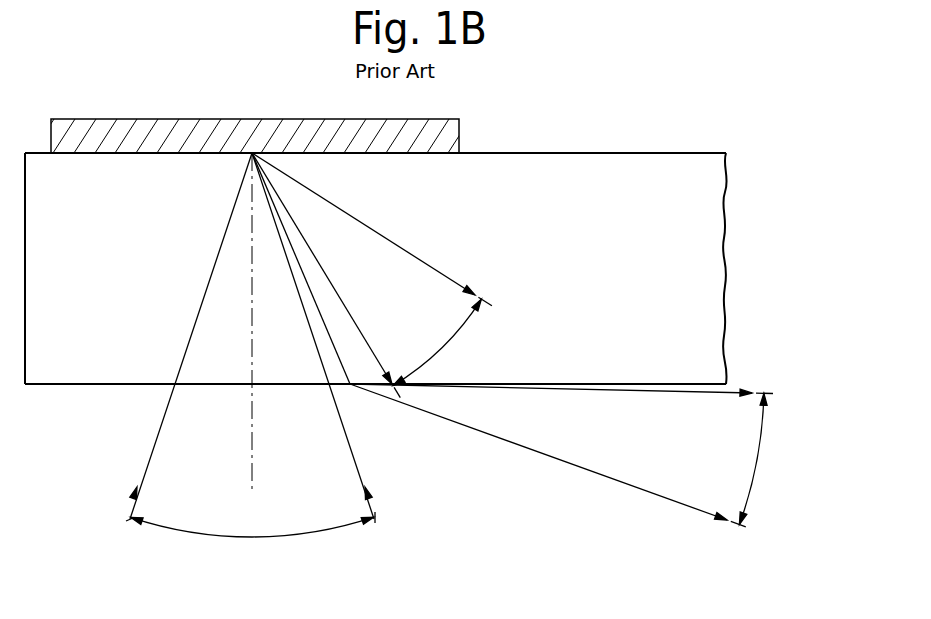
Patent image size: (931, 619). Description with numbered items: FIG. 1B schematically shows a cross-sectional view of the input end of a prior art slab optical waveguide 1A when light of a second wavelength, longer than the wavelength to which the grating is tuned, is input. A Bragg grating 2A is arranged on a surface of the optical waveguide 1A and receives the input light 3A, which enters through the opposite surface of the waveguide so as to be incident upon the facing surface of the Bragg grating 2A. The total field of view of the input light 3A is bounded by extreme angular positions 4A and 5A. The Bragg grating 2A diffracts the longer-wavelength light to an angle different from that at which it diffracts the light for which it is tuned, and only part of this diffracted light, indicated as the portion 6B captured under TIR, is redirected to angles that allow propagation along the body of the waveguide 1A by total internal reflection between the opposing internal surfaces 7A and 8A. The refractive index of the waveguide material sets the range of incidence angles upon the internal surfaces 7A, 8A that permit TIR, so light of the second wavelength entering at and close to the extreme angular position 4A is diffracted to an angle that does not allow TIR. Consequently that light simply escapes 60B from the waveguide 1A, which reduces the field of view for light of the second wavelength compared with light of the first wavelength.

The optical waveguide 1A is at (633, 173).
The Bragg grating 2A is at (123, 137).
The input light 3A is at (162, 524).
The extreme angular position of the TFOV 4A is at (147, 464).
The extreme angular position of the TFOV 5A is at (357, 460).
The diffracted light captured under TIR 6B is at (443, 354).
The internal surface 7A is at (560, 153).
The internal surface 8A is at (680, 383).
The escaping light 60B is at (755, 470).